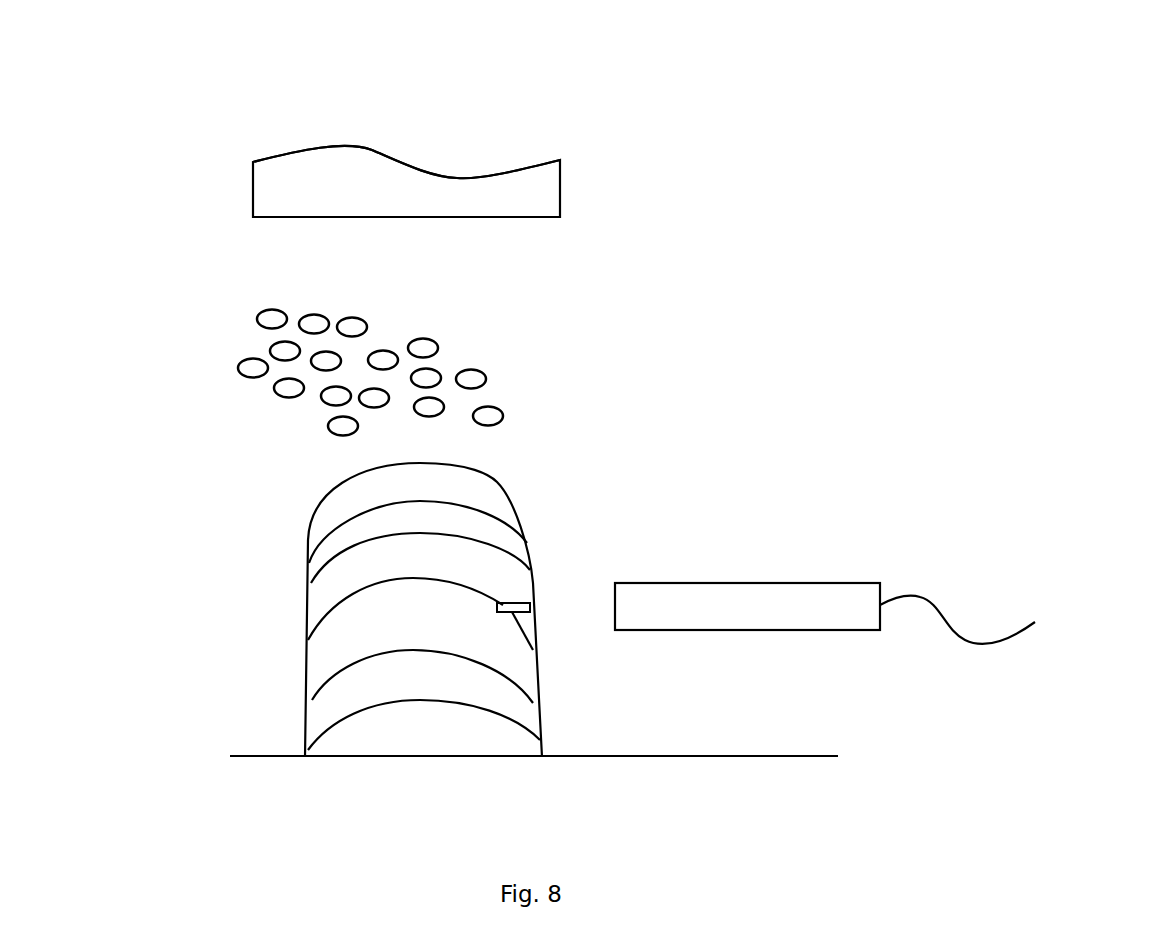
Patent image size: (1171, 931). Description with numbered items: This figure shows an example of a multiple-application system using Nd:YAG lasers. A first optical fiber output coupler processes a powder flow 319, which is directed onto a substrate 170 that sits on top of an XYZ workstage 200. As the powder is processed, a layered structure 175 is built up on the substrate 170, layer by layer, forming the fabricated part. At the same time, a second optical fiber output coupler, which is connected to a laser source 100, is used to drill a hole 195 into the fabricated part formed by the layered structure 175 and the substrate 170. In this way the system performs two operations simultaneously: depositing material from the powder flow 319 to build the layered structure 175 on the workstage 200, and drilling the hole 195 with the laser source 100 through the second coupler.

The laser source 100 is at (408, 90).
The powder flow 319 is at (205, 357).
The substrate 170 is at (266, 752).
The layered structure 175 is at (320, 640).
The hole 195 is at (545, 620).
The XYZ workstage 200 is at (423, 630).